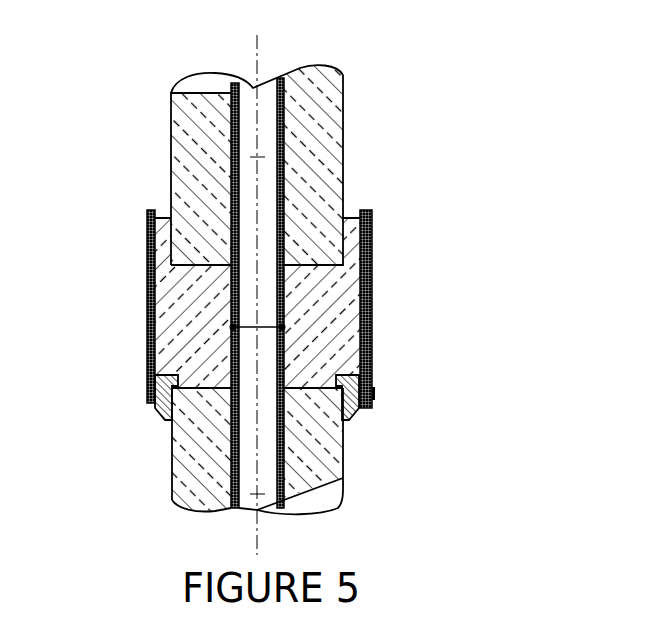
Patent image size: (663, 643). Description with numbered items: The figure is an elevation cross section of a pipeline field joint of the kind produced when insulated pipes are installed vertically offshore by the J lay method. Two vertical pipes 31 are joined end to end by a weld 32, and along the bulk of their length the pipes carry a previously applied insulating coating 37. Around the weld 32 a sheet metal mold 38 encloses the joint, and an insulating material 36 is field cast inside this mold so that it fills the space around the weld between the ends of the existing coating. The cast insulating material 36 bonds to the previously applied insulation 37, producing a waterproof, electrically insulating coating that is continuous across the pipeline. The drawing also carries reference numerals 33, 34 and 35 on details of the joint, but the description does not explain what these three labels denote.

The vertical pipes 31 is at (283, 145).
The weld 32 is at (282, 327).
The lower body portion 33 is at (155, 408).
The flange ring 34 is at (150, 393).
The sleeve assembly 35 is at (155, 205).
The insulating material 36 is at (330, 320).
The insulating coating 37 is at (327, 185).
The sheet metal mold 38 is at (150, 300).